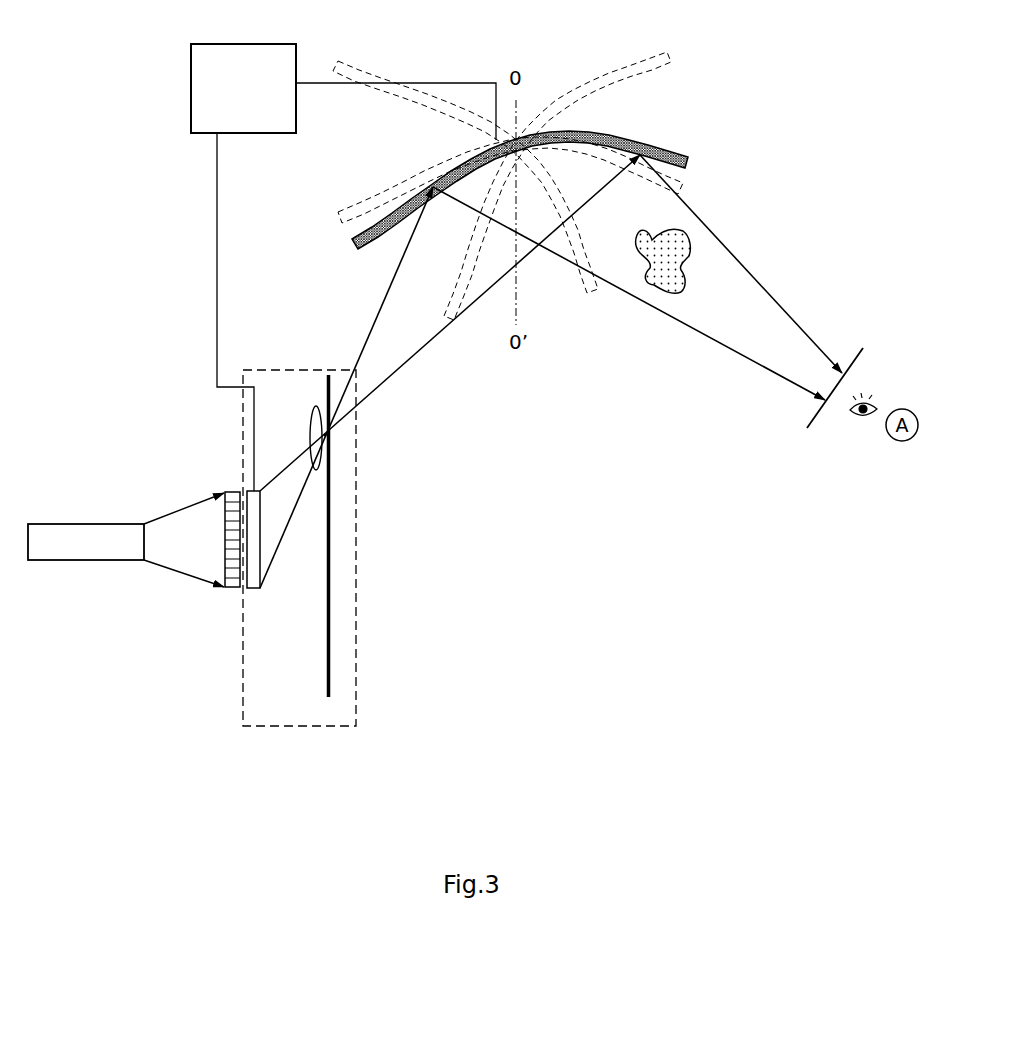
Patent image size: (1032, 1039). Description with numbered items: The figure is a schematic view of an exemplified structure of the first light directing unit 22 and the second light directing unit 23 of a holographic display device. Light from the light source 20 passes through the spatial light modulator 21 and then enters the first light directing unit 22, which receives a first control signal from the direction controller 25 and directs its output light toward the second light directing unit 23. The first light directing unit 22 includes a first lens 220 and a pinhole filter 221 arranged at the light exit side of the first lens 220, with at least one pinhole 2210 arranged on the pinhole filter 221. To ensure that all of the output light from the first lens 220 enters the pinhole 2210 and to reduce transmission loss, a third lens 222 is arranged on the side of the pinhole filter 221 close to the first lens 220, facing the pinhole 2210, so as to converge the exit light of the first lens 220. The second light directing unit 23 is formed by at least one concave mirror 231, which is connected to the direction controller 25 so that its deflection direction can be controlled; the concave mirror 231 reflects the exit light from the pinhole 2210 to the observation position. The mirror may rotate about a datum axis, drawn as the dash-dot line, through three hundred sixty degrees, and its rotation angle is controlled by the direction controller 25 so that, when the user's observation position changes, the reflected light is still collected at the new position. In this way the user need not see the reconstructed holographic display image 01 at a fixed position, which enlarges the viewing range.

The light source 20 is at (62, 560).
The spatial light modulator 21 is at (233, 528).
The first light directing unit 22 is at (272, 703).
The first lens 220 is at (252, 589).
The pinhole filter 221 is at (330, 627).
The third lens 222 is at (315, 407).
The pinhole 2210 is at (330, 435).
The second light directing unit 23 is at (663, 148).
The concave mirror 231 is at (508, 186).
The direction controller 25 is at (191, 100).
The reconstructed holographic display image 01 is at (672, 250).